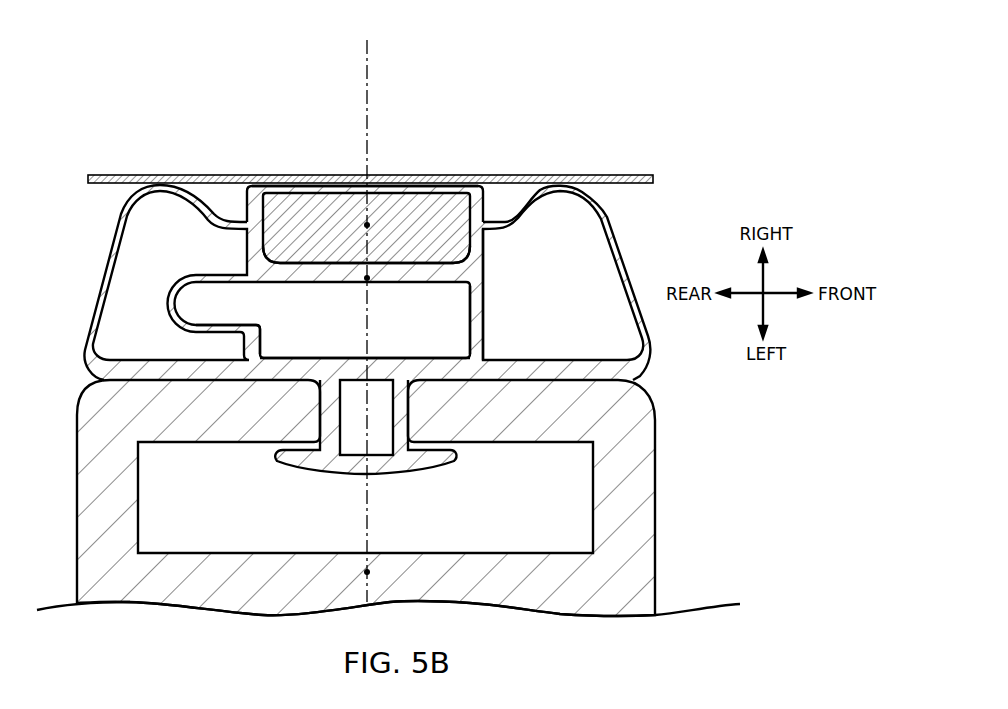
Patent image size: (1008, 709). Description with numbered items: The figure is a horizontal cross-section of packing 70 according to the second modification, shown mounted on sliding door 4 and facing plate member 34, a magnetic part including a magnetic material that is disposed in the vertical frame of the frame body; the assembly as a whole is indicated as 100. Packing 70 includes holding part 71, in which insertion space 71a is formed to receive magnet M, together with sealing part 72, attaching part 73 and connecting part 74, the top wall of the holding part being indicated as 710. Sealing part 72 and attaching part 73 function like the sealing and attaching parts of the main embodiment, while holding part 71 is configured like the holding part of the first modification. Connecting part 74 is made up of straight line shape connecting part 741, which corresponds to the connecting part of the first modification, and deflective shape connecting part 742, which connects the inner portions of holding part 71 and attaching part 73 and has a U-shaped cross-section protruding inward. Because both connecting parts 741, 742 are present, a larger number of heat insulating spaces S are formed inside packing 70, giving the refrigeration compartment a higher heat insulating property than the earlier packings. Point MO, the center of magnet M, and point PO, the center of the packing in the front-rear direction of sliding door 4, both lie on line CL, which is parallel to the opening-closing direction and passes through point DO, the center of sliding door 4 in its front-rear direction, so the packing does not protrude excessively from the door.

The sliding door 4 is at (698, 473).
The plate member 34 is at (163, 176).
The packing 70 is at (368, 295).
The holding part 71 is at (341, 310).
The insertion space 71a is at (467, 268).
The sealing part 72 is at (135, 191).
The attaching part 73 is at (428, 470).
The connecting part 74 is at (384, 371).
The straight line shape connecting part 741 is at (489, 330).
The deflective shape connecting part 742 is at (213, 327).
The device 100 is at (413, 328).
The top wall of magnet unit 710 is at (397, 190).
The magnet M is at (465, 257).
The heat insulating space S is at (143, 339).
The point PO is at (367, 278).
The point MO is at (367, 225).
The point DO is at (367, 572).
The line CL is at (365, 72).